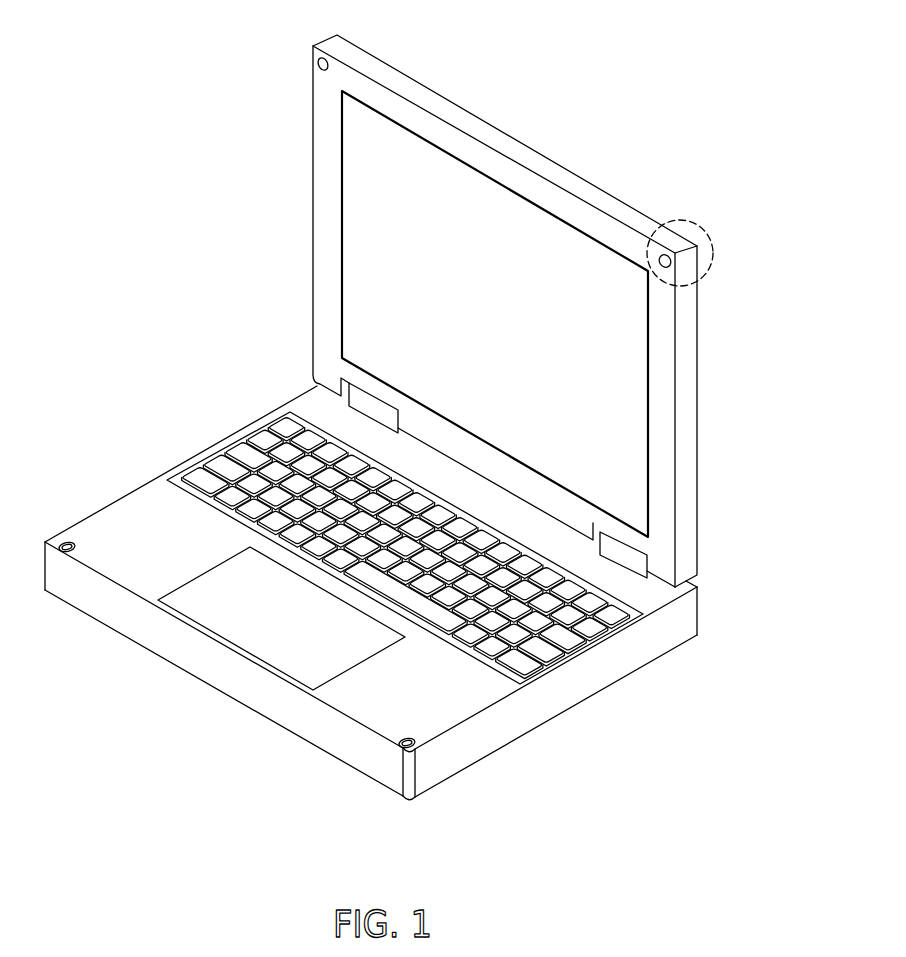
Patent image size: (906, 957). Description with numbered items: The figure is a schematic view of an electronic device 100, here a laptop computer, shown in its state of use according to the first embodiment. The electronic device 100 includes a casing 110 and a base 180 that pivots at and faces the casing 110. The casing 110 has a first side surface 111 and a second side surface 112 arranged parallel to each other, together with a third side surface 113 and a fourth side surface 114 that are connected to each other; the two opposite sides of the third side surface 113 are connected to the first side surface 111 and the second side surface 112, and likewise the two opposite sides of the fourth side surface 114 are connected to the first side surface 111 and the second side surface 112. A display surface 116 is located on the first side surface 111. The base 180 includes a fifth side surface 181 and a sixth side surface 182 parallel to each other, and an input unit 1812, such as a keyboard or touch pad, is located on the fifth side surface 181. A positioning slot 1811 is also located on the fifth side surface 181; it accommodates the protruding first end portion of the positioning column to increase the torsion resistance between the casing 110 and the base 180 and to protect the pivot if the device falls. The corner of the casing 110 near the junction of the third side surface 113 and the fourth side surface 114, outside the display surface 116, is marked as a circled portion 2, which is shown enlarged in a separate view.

The electronic device 100 is at (413, 442).
The casing 110 is at (547, 311).
The first side surface 111 is at (662, 380).
The second side surface 112 is at (698, 343).
The third side surface 113 is at (432, 100).
The fourth side surface 114 is at (683, 502).
The display surface 116 is at (607, 445).
The circled portion 2 is at (708, 232).
The base 180 is at (371, 618).
The fifth side surface 181 is at (453, 705).
The positioning slot 1811 is at (398, 741).
The input unit 1812 is at (258, 424).
The sixth side surface 182 is at (312, 748).